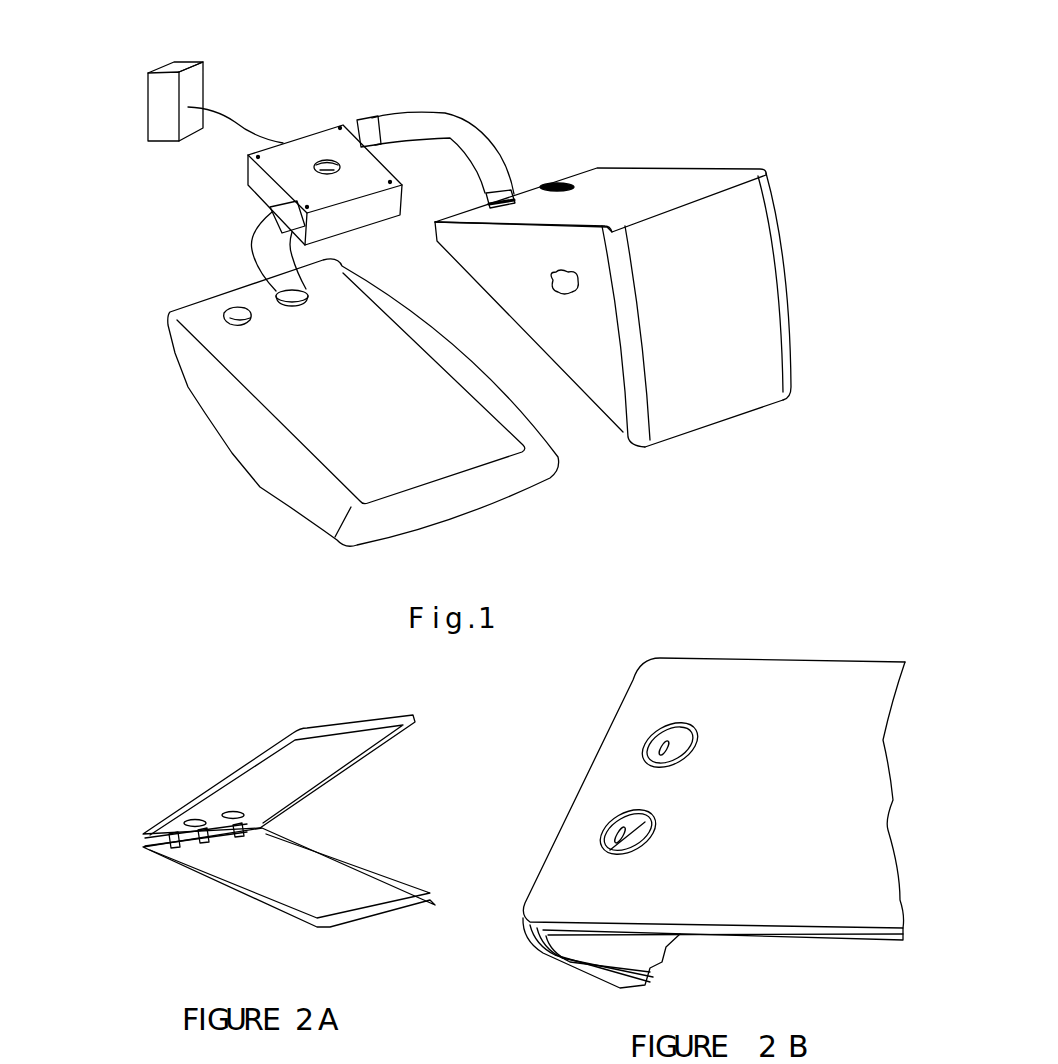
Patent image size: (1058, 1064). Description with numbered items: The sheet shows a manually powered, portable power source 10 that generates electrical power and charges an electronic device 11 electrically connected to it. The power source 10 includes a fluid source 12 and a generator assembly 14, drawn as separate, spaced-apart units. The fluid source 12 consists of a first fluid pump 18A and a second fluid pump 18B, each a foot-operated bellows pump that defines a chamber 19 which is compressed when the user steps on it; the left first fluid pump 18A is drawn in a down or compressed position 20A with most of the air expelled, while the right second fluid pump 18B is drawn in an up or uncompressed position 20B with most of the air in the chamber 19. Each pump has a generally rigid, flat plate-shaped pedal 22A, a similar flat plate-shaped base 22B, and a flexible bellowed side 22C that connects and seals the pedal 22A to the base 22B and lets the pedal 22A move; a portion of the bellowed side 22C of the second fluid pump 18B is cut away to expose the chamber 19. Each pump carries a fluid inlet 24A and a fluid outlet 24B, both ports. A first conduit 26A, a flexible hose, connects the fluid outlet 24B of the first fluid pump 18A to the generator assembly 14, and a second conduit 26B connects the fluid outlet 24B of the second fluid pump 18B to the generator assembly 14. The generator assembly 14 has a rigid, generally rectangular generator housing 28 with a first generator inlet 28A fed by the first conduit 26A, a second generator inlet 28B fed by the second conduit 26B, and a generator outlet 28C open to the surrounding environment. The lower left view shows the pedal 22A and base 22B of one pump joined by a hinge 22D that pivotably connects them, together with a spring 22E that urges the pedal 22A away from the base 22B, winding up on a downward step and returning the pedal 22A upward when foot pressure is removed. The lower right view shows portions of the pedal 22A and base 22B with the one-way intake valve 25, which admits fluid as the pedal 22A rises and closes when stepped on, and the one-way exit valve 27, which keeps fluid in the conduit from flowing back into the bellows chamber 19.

In FIG. 1, the power source 10 is at (839, 153).
In FIG. 1, the electronic device 11 is at (155, 98).
In FIG. 1, the fluid source 12 is at (270, 460).
In FIG. 1, the generator assembly 14 is at (364, 211).
In FIG. 1, the first fluid pump 18A is at (300, 487).
In FIG. 2A, the first fluid pump 18A is at (371, 708).
In FIG. 2B, the first fluid pump 18A is at (809, 652).
In FIG. 1, the second fluid pump 18B is at (754, 313).
In FIG. 1, the chamber 19 is at (560, 292).
In FIG. 1, the compressed position 20A is at (202, 413).
In FIG. 1, the uncompressed position 20B is at (797, 338).
In FIG. 1, the pedal 22A is at (677, 180).
In FIG. 2A, the pedal 22A is at (247, 763).
In FIG. 2B, the pedal 22A is at (727, 673).
In FIG. 1, the base 22B is at (688, 432).
In FIG. 2A, the base 22B is at (317, 870).
In FIG. 2B, the base 22B is at (562, 963).
In FIG. 1, the bellowed side 22C is at (753, 242).
In FIG. 2A, the hinge 22D is at (177, 842).
In FIG. 2A, the spring 22E is at (217, 845).
In FIG. 1, the fluid inlet 24A is at (568, 175).
In FIG. 1, the fluid outlet 24B is at (517, 200).
In FIG. 2B, the intake valve 25 is at (677, 743).
In FIG. 1, the first conduit 26A is at (256, 243).
In FIG. 1, the second conduit 26B is at (467, 130).
In FIG. 2B, the exit valve 27 is at (620, 820).
In FIG. 1, the generator housing 28 is at (290, 138).
In FIG. 1, the first generator inlet 28A is at (287, 203).
In FIG. 1, the second generator inlet 28B is at (354, 126).
In FIG. 1, the generator outlet 28C is at (319, 162).